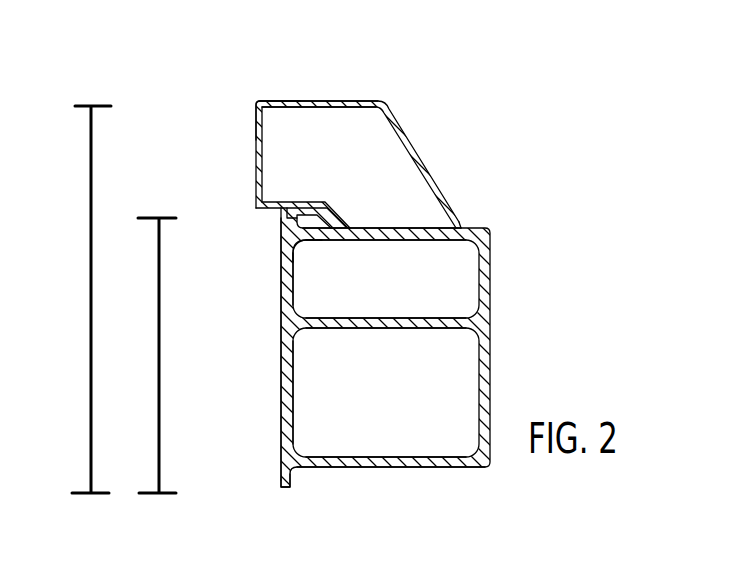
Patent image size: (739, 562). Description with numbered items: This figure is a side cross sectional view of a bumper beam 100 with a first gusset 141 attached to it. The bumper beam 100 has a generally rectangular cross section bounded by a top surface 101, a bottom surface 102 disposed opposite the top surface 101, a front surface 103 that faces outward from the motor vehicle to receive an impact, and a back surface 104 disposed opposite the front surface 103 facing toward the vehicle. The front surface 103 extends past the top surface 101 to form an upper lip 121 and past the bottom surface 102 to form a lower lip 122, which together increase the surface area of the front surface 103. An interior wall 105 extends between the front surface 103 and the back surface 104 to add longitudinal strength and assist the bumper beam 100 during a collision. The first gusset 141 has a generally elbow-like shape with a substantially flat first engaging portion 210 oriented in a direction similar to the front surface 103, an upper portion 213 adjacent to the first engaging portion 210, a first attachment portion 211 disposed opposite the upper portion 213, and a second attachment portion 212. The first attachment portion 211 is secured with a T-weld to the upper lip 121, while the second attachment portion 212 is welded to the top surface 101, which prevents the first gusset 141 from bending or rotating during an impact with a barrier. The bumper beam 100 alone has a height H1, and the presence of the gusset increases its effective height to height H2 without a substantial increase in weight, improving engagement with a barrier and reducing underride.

The bumper beam 100 is at (494, 102).
The top surface 101 is at (323, 213).
The bottom surface 102 is at (392, 467).
The front surface 103 is at (282, 340).
The back surface 104 is at (492, 298).
The interior wall 105 is at (373, 328).
The upper lip 121 is at (278, 220).
The lower lip 122 is at (282, 482).
The first gusset 141 is at (236, 84).
The first engaging portion 210 is at (256, 132).
The first attachment portion 211 is at (305, 237).
The second attachment portion 212 is at (386, 233).
The upper portion 213 is at (317, 100).
The height H1 is at (162, 403).
The height H2 is at (88, 285).